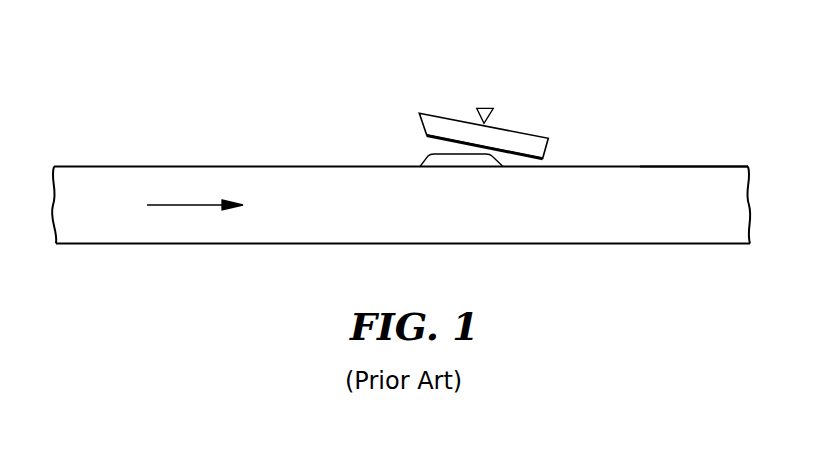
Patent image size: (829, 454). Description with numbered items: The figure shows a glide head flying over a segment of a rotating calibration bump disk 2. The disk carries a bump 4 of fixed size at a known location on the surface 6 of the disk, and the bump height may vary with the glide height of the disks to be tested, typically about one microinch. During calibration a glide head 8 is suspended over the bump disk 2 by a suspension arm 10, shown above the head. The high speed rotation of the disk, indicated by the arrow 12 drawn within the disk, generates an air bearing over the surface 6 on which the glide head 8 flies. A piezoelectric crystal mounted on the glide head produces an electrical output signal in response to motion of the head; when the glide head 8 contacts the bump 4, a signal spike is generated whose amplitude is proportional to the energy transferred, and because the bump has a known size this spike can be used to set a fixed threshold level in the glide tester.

The calibration bump disk 2 is at (663, 227).
The bump 4 is at (422, 162).
The surface 6 is at (677, 166).
The glide head 8 is at (530, 135).
The suspension arm 10 is at (485, 107).
The arrow 12 is at (163, 204).